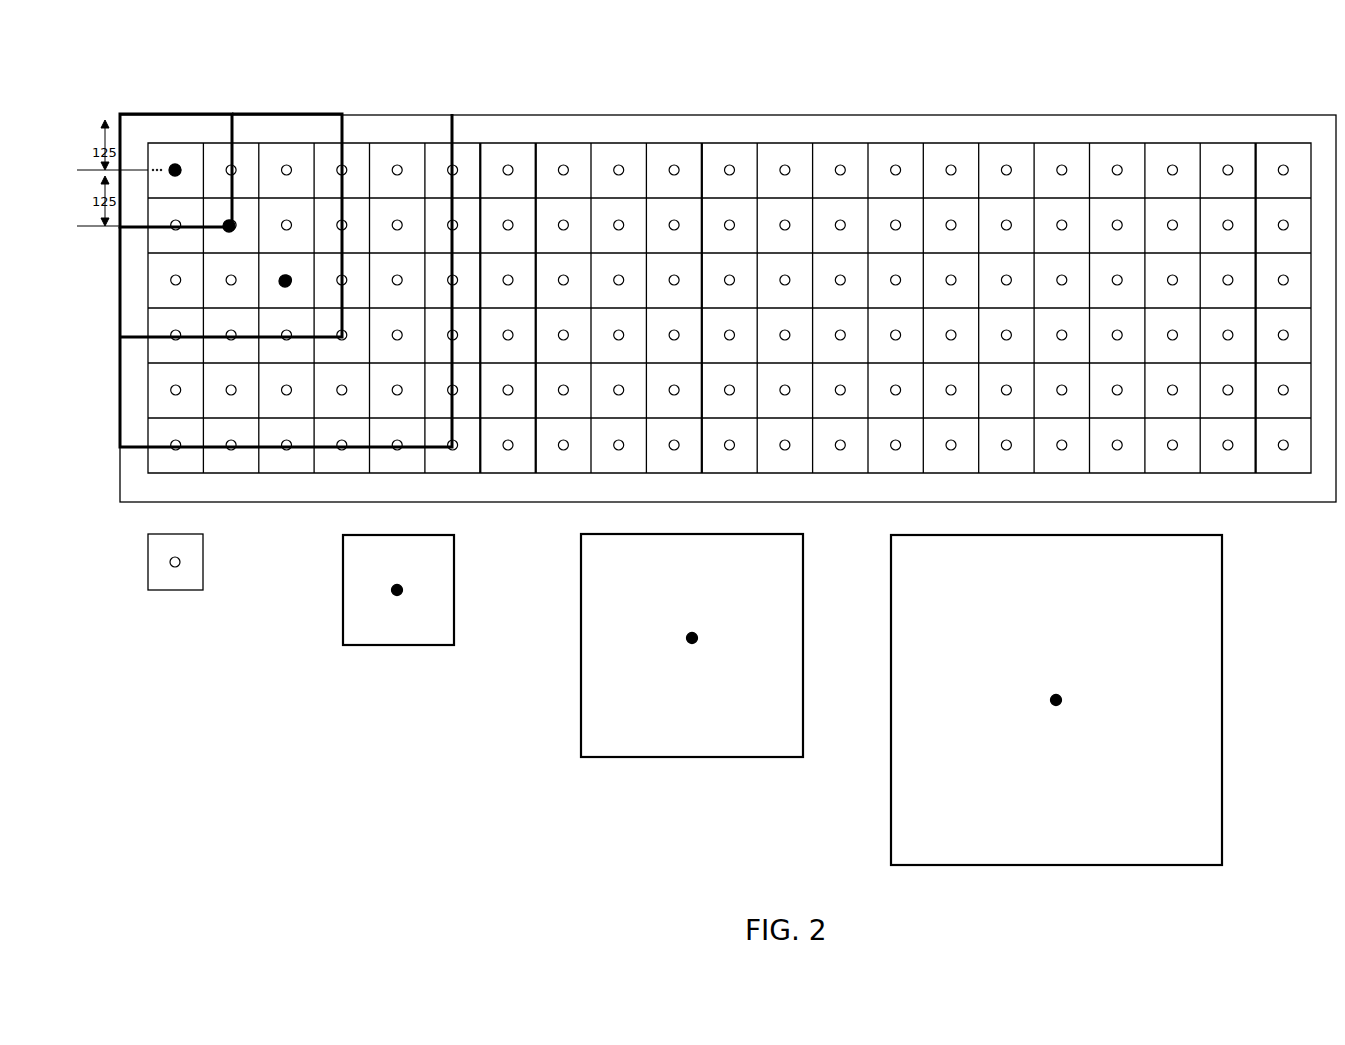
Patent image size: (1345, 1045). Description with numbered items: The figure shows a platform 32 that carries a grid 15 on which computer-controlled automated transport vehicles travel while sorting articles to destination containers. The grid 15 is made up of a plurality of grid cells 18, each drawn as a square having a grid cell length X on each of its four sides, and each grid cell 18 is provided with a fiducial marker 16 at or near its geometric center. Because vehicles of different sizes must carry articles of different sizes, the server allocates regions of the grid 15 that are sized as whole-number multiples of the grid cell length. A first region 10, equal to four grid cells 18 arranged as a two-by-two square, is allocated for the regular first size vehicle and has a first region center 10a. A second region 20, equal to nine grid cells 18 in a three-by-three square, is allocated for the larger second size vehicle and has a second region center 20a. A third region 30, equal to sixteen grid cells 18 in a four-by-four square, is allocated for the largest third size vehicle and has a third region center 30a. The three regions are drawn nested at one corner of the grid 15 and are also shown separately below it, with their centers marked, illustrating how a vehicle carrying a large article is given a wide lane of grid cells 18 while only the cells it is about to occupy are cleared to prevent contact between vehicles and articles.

The first region 10 is at (190, 226).
The first region center 10a is at (175, 166).
The grid 15 is at (493, 141).
The fiducial marker 16 is at (510, 166).
The grid cell 18 is at (1010, 140).
The second region 20 is at (193, 336).
The second region center 20a is at (229, 222).
The third region 30 is at (190, 446).
The third region center 30a is at (285, 277).
The platform 32 is at (787, 113).